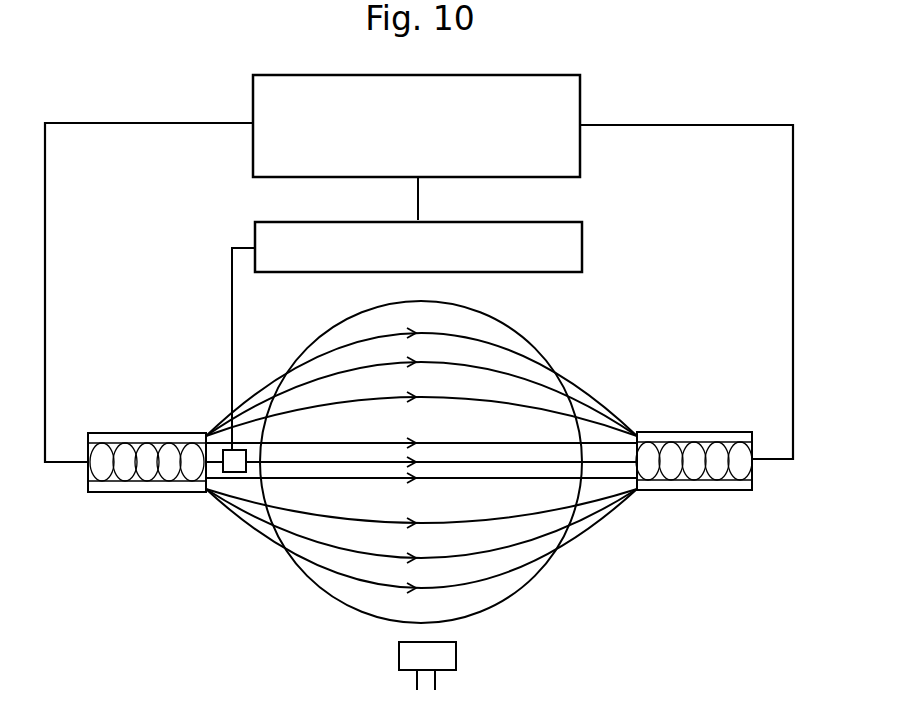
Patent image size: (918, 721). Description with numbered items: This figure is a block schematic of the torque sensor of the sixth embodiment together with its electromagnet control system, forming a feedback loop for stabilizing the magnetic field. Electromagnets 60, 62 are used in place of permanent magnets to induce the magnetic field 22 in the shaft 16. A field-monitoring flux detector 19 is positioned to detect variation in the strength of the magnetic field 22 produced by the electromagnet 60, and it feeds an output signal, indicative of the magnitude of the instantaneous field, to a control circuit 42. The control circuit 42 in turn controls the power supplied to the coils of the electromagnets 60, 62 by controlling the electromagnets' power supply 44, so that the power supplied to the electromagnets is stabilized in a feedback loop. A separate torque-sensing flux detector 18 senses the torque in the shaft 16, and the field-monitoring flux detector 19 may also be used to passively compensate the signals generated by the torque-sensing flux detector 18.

The power supply 44 is at (253, 90).
The control circuit 42 is at (582, 250).
The electromagnet 60 is at (143, 493).
The electromagnet 62 is at (708, 490).
The field-monitoring flux detector 19 is at (228, 487).
The magnetic field 22 is at (507, 570).
The shaft 16 is at (425, 622).
The torque-sensing flux detector 18 is at (399, 659).